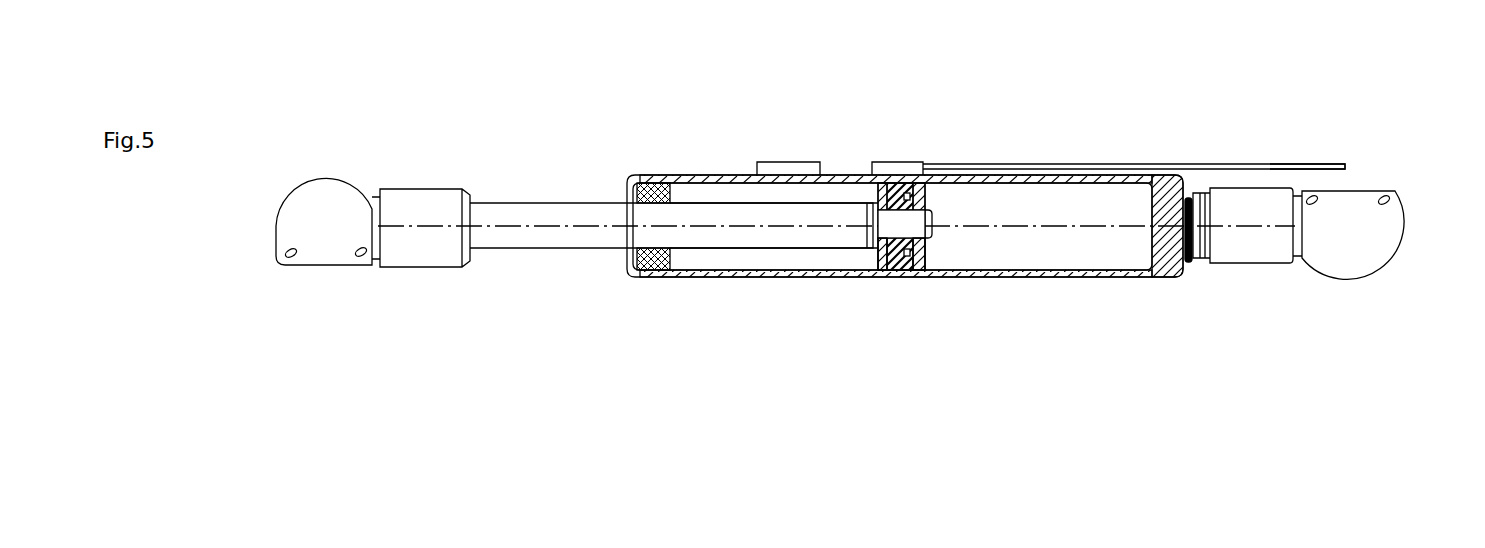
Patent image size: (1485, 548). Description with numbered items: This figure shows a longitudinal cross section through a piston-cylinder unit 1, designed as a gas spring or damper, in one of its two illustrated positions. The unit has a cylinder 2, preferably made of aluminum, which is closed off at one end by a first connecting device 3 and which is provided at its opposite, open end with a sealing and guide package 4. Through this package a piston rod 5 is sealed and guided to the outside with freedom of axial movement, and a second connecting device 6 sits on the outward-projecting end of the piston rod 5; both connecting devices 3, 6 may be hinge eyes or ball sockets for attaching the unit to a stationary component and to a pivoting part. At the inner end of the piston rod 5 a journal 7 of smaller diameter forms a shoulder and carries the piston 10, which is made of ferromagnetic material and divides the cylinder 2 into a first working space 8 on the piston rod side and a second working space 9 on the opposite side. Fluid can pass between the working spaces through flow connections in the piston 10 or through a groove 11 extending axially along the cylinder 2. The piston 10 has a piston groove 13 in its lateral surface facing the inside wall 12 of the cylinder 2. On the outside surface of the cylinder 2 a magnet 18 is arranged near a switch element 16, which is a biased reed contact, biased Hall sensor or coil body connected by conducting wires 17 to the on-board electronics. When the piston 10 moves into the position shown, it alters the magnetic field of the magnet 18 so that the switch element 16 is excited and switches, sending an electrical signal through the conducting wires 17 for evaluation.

The piston-cylinder unit 1 is at (1322, 25).
The cylinder 2 is at (1125, 272).
The first connecting device 3 is at (1350, 230).
The sealing and guide package 4 is at (640, 263).
The piston rod 5 is at (553, 235).
The second connecting device 6 is at (333, 223).
The journal 7 is at (897, 218).
The first working space 8 is at (783, 195).
The second working space 9 is at (1093, 195).
The piston 10 is at (922, 272).
The groove 11 is at (1068, 270).
The inside wall 12 is at (1040, 183).
The piston groove 13 is at (893, 263).
The switch element 16 is at (898, 166).
The conducting wires 17 is at (1281, 166).
The magnet 18 is at (793, 167).